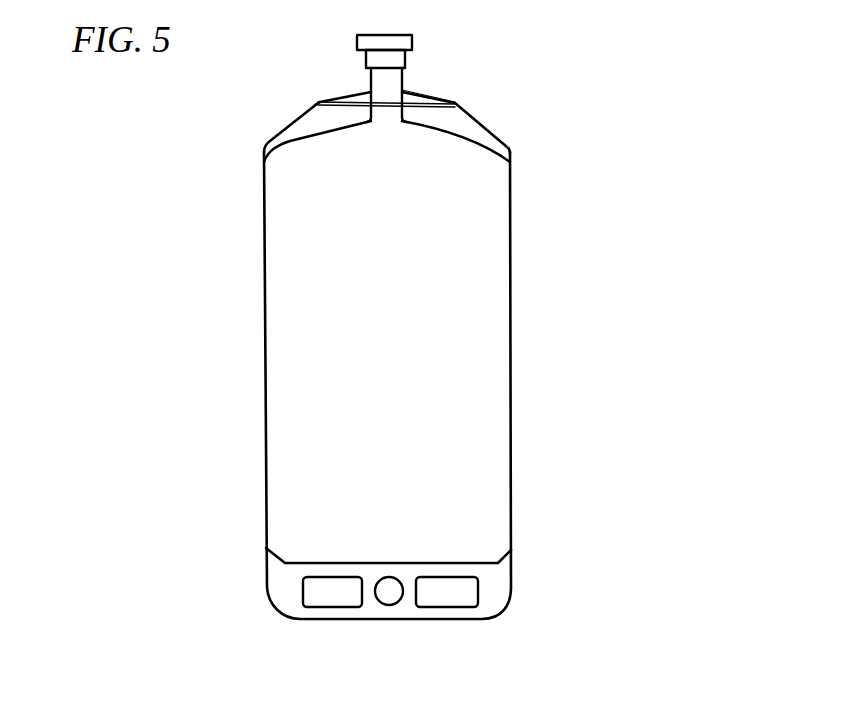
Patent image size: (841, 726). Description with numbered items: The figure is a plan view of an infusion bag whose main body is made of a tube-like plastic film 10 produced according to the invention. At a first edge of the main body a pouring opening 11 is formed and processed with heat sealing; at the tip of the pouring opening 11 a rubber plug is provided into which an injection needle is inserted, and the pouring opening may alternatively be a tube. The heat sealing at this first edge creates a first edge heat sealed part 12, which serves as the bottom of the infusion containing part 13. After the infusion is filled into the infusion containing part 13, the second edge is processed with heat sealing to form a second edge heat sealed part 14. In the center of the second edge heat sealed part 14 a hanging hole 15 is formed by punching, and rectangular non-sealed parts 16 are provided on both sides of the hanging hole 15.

The tube-like plastic film 10 is at (405, 363).
The pouring opening 11 is at (402, 92).
The first edge heat sealed part 12 is at (453, 120).
The infusion containing part 13 is at (313, 353).
The second edge heat sealed part 14 is at (448, 634).
The hanging hole 15 is at (387, 605).
The rectangular non-sealed parts 16 is at (322, 607).